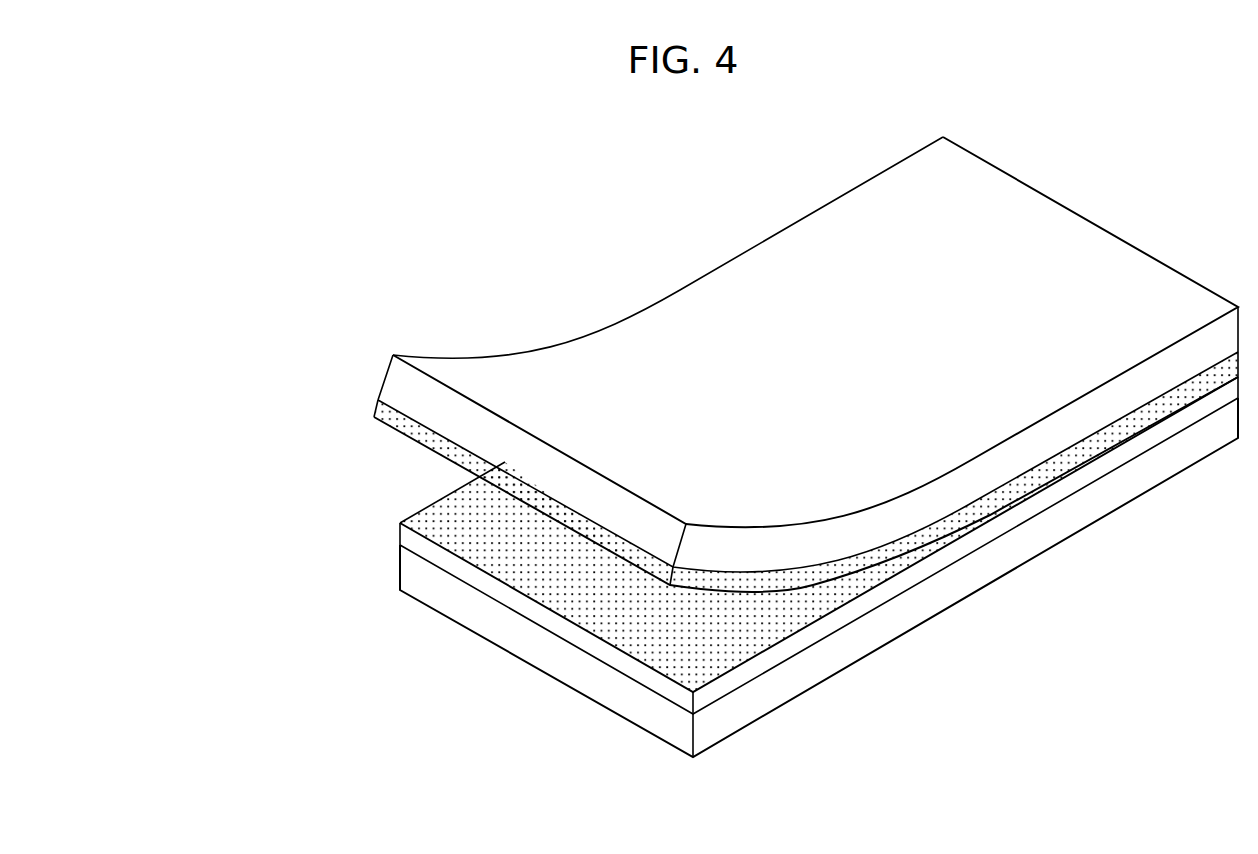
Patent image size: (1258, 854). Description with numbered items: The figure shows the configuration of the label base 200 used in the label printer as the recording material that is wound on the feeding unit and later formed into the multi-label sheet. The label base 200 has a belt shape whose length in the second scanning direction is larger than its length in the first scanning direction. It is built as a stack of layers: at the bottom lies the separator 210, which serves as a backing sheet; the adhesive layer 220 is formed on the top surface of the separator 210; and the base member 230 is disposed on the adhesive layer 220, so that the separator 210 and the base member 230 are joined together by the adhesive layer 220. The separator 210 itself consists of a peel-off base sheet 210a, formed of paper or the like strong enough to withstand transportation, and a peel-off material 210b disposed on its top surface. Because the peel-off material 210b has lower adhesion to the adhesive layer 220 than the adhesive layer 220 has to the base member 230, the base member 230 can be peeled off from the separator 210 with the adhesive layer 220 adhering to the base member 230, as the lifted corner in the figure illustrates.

The label base 200 is at (592, 270).
The separator 210 is at (197, 517).
The peel-off base sheet 210a is at (410, 570).
The peel-off material 210b is at (403, 533).
The adhesive layer 220 is at (403, 425).
The base member 230 is at (393, 382).